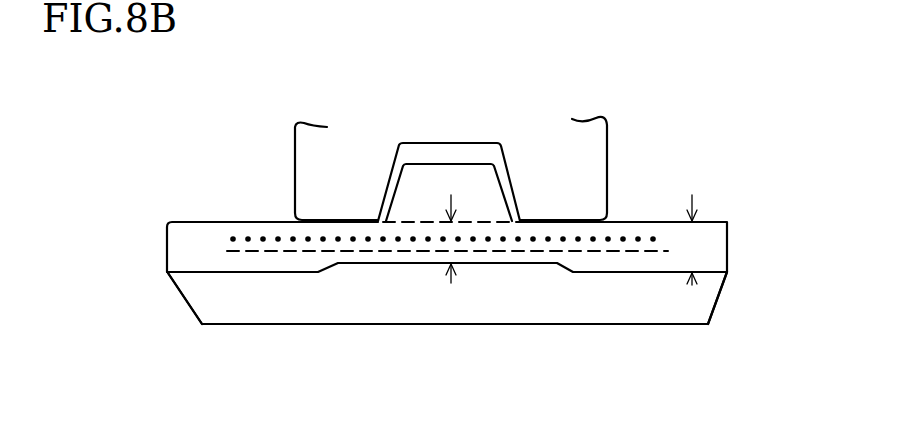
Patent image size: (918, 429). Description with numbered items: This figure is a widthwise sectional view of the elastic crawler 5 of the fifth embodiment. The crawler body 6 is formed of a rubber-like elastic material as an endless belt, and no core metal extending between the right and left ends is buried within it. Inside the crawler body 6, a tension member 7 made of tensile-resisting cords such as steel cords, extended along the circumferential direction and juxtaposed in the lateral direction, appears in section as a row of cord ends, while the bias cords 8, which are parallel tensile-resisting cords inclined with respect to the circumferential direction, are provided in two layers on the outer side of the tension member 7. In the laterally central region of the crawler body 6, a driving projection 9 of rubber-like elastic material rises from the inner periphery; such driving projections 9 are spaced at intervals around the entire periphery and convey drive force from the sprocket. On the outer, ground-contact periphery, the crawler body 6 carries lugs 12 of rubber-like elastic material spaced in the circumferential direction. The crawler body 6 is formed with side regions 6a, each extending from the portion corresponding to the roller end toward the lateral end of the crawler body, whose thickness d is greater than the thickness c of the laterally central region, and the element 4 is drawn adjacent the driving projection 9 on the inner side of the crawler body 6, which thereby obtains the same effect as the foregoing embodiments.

The resist pattern 4 is at (611, 152).
The elastic crawler 5 is at (653, 206).
The crawler body 6 is at (523, 265).
The side regions 6a is at (226, 277).
The tension member 7 is at (266, 237).
The bias cords 8 is at (277, 253).
The driving projections 9 is at (452, 163).
The lugs 12 is at (583, 325).
The thickness c is at (447, 247).
The thickness d is at (697, 247).